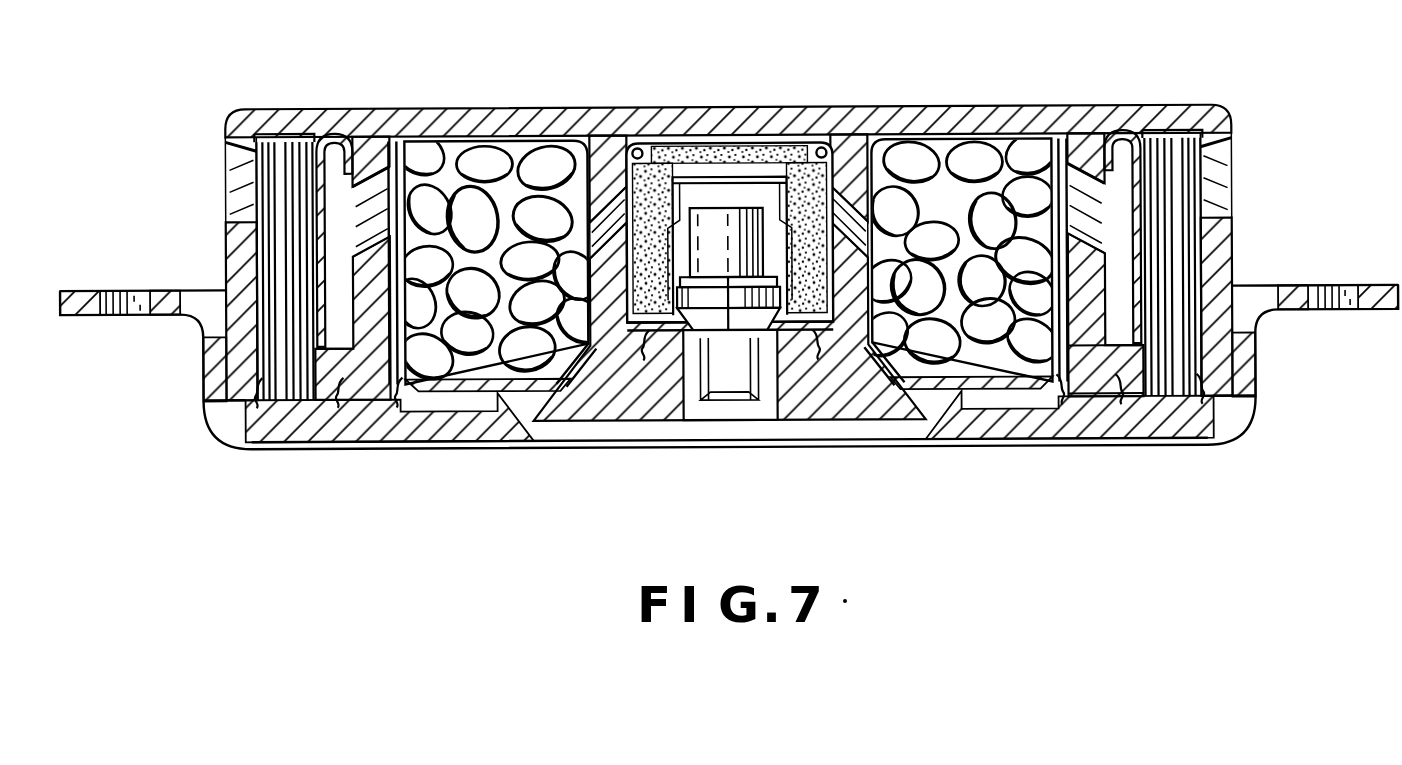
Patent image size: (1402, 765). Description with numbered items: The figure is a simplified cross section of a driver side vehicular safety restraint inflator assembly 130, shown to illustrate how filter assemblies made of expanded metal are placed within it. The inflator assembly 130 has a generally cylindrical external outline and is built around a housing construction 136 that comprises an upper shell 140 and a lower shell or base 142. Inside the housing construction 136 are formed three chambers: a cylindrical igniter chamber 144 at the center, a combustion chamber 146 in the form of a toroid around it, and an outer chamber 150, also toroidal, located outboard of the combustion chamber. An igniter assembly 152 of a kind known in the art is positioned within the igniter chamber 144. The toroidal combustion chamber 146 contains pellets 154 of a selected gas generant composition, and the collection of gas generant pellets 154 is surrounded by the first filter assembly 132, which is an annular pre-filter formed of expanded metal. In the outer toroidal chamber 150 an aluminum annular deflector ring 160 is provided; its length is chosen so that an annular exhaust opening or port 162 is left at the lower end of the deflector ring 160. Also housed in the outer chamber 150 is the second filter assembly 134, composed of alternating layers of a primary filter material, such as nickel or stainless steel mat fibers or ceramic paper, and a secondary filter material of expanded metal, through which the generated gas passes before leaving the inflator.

The inflator assembly 130 is at (729, 260).
The first filter assembly 132 is at (405, 150).
The second filter assembly 134 is at (278, 170).
The housing construction 136 is at (588, 108).
The upper shell 140 is at (377, 140).
The lower shell or base 142 is at (395, 448).
The igniter chamber 144 is at (800, 150).
The combustion chamber 146 is at (878, 148).
The outer chamber 150 is at (1107, 345).
The igniter assembly 152 is at (659, 158).
The pellets 154 is at (988, 328).
The deflector ring 160 is at (1130, 140).
The annular exhaust opening or port 162 is at (1147, 400).